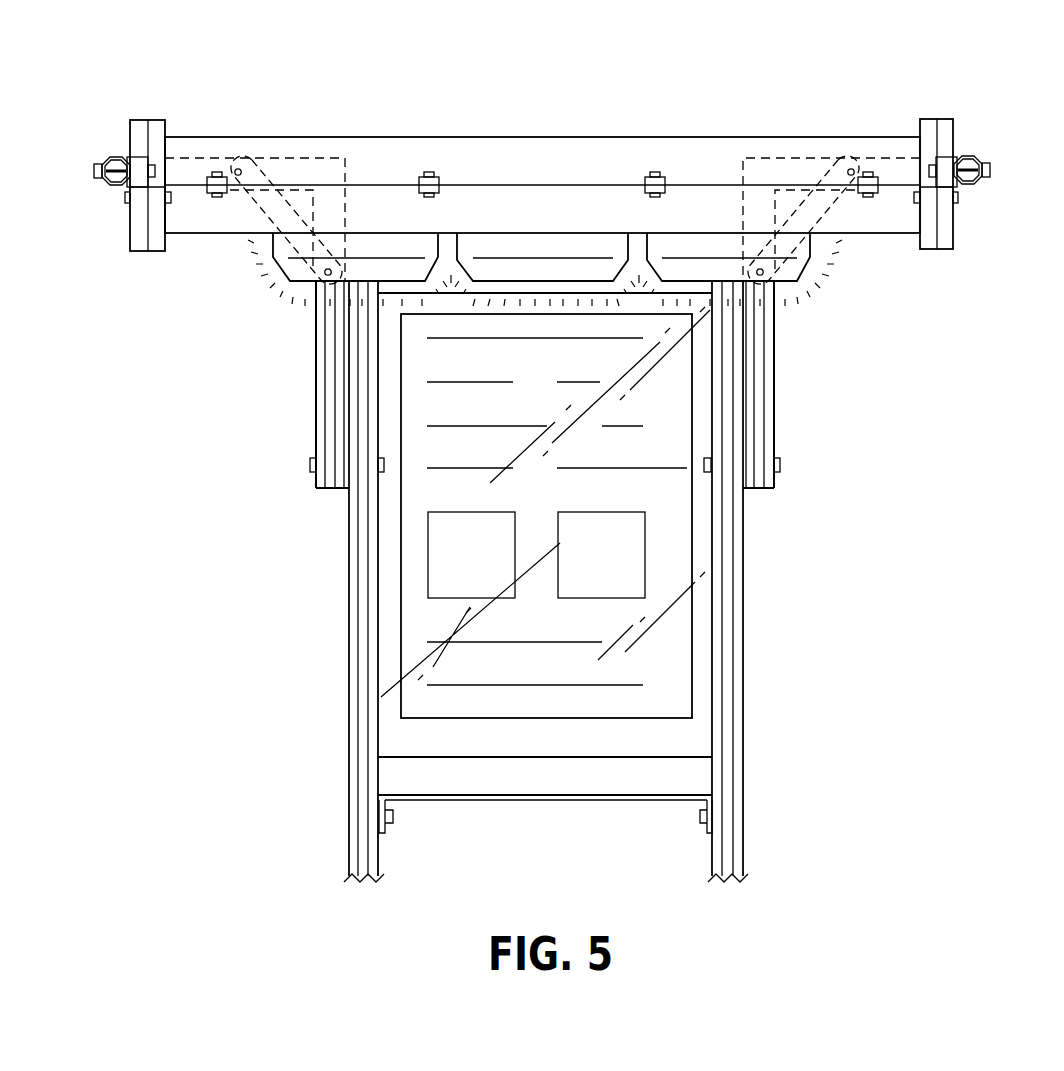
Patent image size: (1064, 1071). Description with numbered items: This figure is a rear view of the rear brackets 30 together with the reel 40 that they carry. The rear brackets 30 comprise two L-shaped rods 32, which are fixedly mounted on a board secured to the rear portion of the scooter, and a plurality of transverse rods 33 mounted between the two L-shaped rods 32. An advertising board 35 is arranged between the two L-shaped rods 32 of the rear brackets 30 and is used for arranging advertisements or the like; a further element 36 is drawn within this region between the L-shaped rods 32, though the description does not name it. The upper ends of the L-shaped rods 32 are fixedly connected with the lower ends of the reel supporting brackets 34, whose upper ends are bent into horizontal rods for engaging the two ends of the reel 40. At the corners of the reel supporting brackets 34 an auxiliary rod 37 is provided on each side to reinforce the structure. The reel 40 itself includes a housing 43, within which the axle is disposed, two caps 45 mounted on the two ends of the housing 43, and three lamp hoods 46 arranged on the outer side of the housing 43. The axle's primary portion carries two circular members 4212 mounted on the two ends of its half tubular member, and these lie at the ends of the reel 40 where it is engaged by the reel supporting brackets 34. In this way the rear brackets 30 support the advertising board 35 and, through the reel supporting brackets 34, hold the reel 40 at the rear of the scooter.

The rear brackets 30 is at (764, 656).
The L-shaped rods 32 is at (352, 597).
The transverse rods 33 is at (522, 784).
The reel supporting brackets 34 is at (118, 190).
The advertising board 35 is at (403, 748).
The panel 36 is at (381, 697).
The auxiliary rod 37 is at (283, 237).
The reel 40 is at (964, 117).
The circular members 4212 is at (148, 253).
The housing 43 is at (716, 150).
The caps 45 is at (131, 250).
The lamp hoods 46 is at (303, 278).